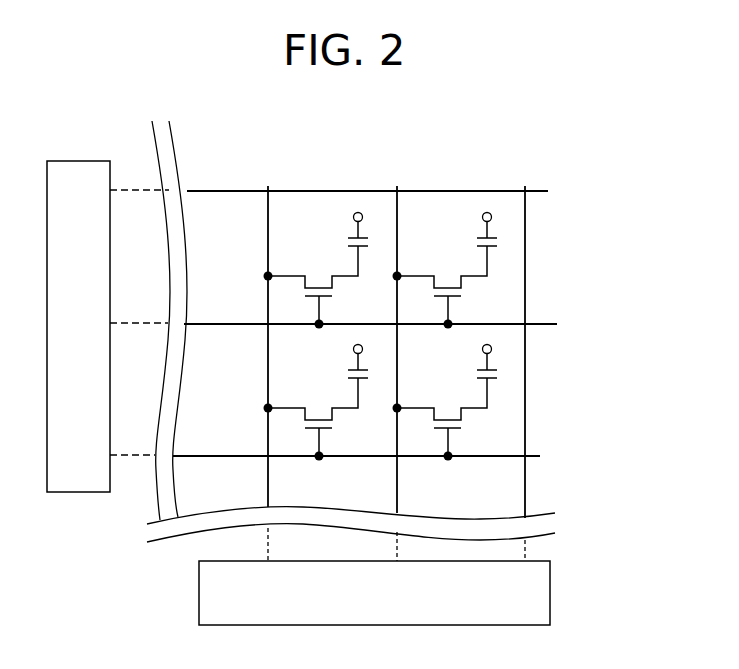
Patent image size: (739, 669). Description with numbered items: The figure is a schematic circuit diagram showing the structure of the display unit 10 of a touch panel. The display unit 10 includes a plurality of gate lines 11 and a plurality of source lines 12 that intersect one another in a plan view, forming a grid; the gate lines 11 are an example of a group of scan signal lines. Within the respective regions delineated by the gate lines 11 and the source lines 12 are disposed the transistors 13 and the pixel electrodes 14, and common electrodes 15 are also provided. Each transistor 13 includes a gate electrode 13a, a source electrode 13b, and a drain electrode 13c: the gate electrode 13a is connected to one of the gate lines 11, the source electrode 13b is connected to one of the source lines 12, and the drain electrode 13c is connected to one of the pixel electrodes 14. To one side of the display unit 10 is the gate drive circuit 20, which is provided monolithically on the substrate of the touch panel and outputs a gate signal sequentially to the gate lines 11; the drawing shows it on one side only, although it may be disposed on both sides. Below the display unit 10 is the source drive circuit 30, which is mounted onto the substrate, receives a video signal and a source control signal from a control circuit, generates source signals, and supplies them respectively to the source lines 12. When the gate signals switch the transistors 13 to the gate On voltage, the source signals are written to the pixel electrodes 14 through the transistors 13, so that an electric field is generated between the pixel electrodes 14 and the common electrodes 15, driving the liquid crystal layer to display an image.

The display unit 10 is at (455, 136).
The gate line 11 is at (332, 190).
The source line 12 is at (268, 478).
The transistor 13 is at (378, 293).
The gate electrode 13a is at (307, 306).
The source electrode 13b is at (292, 268).
The drain electrode 13c is at (323, 267).
The pixel electrode 14 is at (366, 249).
The common electrode 15 is at (358, 212).
The gate drive circuit 20 is at (69, 161).
The source drive circuit 30 is at (551, 577).